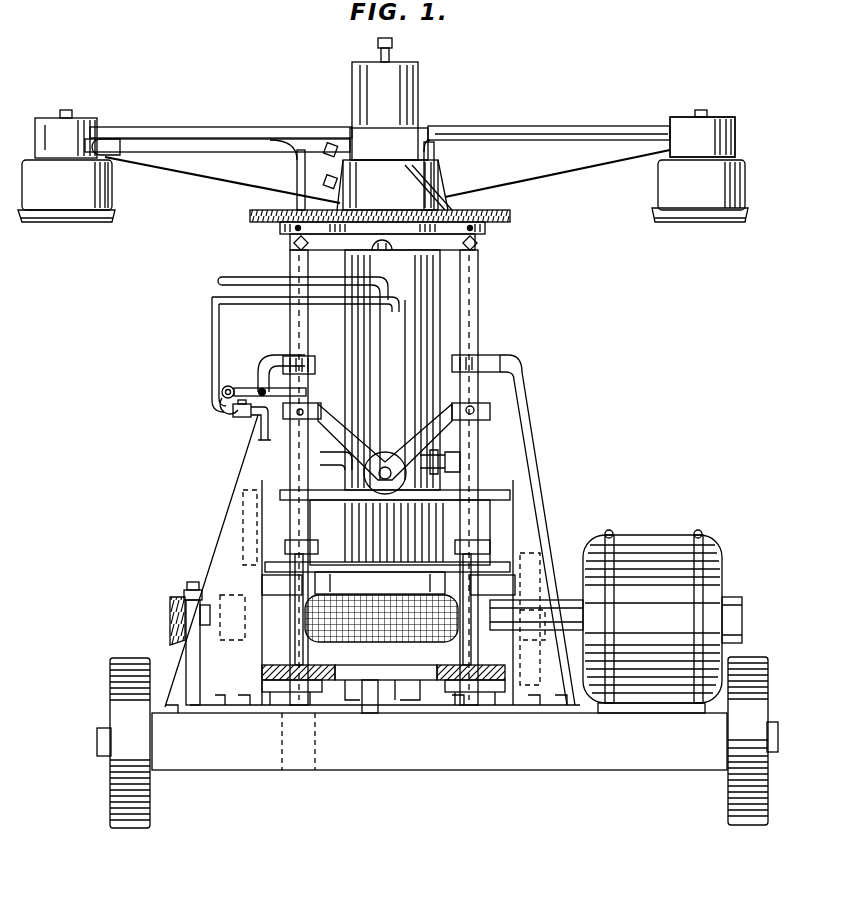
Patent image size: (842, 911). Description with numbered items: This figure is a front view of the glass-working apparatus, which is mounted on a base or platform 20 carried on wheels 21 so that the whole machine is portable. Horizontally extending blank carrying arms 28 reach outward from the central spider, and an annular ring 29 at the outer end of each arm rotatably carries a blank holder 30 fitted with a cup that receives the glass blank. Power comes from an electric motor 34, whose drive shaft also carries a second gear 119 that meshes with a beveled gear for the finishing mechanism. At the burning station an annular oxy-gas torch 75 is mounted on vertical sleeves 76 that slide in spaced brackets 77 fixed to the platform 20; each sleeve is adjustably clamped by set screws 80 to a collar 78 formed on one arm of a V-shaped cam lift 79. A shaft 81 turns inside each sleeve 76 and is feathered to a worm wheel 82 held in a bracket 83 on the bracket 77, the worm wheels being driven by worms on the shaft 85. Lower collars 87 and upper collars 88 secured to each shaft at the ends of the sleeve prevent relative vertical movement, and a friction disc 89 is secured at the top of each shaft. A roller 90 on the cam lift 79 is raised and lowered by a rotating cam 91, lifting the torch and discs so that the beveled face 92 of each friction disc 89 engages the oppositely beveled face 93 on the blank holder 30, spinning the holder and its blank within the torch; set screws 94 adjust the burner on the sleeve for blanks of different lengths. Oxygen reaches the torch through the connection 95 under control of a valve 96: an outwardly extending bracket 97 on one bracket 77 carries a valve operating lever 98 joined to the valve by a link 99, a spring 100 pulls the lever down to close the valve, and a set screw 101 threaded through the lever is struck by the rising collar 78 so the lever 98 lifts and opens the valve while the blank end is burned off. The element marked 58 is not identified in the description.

The base or platform 20 is at (186, 758).
The wheels 21 is at (107, 805).
The blank carrying arms 28 is at (546, 140).
The annular ring 29 is at (720, 150).
The blank holder 30 is at (112, 192).
The electric motor 34 is at (672, 537).
The pipe elbow 58 is at (205, 148).
The annular oxy-gas torch 75 is at (410, 287).
The vertical sleeves 76 is at (290, 260).
The brackets 77 is at (515, 365).
The collar 78 is at (480, 403).
The V-shaped cam lift 79 is at (363, 440).
The set screws 80 is at (490, 412).
The shaft 81 is at (292, 558).
The worm wheel 82 is at (312, 680).
The bracket 83 is at (290, 683).
The shaft 85 is at (368, 672).
The lower collars 87 is at (313, 543).
The upper collars 88 is at (277, 228).
The friction disc 89 is at (260, 212).
The roller 90 is at (467, 488).
The rotating cam 91 is at (387, 536).
The beveled face 92 is at (487, 222).
The beveled face 93 is at (110, 220).
The set screws 94 is at (483, 244).
The connection 95 is at (215, 307).
The valve 96 is at (233, 416).
The bracket 97 is at (235, 383).
The valve operating lever 98 is at (273, 368).
The link 99 is at (223, 406).
The spring 100 is at (253, 417).
The set screw 101 is at (310, 383).
The second gear 119 is at (168, 625).